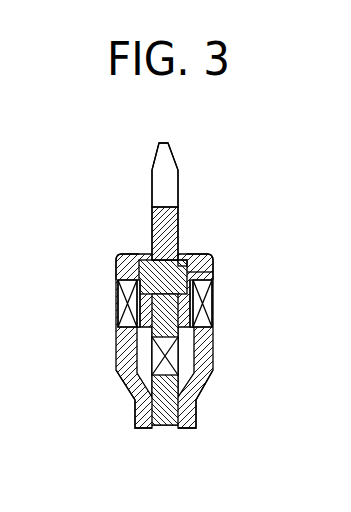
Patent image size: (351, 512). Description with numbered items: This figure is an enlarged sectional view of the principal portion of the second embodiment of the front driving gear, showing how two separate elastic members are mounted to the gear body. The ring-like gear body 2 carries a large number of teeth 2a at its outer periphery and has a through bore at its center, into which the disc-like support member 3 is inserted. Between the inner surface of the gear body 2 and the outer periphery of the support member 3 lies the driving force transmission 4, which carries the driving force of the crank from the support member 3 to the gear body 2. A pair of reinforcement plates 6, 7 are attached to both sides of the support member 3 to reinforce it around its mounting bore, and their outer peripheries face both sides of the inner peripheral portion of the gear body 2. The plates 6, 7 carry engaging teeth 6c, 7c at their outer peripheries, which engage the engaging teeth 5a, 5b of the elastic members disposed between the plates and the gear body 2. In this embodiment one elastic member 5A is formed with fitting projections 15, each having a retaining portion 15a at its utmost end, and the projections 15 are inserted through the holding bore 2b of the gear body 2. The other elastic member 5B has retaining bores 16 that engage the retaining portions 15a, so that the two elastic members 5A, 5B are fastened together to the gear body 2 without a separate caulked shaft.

The gear body 2 is at (182, 212).
The teeth 2a is at (172, 168).
The holding bore 2b is at (117, 252).
The support member 3 is at (161, 430).
The driving force transmission 4 is at (170, 353).
The elastic member 5A is at (117, 265).
The elastic member 5B is at (211, 254).
The engaging teeth 5a is at (117, 300).
The engaging teeth 5b is at (212, 301).
The reinforcement plate 6 is at (134, 413).
The engaging teeth 6c is at (120, 318).
The reinforcement plate 7 is at (198, 410).
The engaging teeth 7c is at (205, 318).
The fitting projection 15 is at (158, 258).
The retaining portion 15a is at (188, 262).
The retaining bore 16 is at (187, 272).